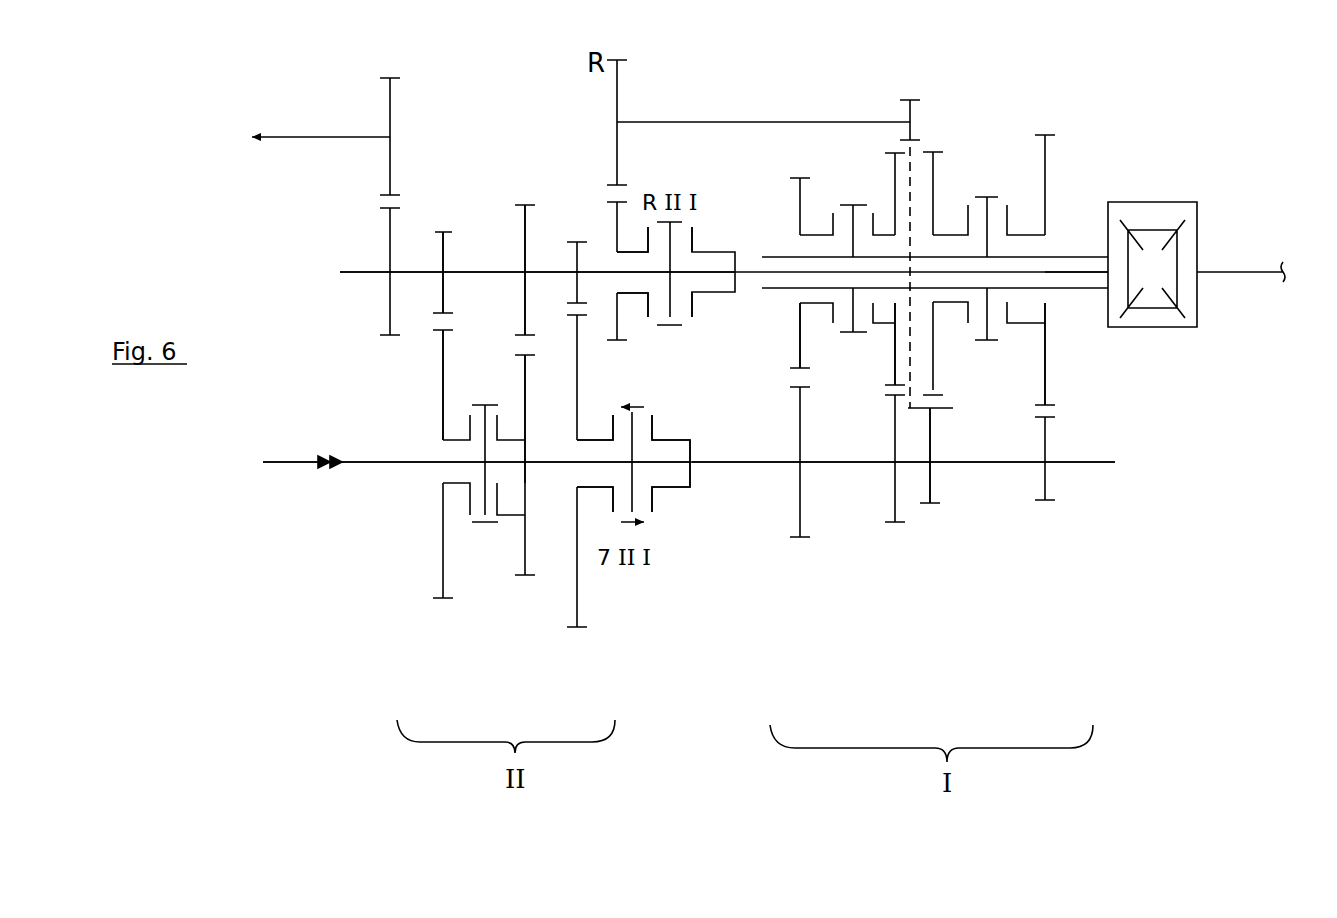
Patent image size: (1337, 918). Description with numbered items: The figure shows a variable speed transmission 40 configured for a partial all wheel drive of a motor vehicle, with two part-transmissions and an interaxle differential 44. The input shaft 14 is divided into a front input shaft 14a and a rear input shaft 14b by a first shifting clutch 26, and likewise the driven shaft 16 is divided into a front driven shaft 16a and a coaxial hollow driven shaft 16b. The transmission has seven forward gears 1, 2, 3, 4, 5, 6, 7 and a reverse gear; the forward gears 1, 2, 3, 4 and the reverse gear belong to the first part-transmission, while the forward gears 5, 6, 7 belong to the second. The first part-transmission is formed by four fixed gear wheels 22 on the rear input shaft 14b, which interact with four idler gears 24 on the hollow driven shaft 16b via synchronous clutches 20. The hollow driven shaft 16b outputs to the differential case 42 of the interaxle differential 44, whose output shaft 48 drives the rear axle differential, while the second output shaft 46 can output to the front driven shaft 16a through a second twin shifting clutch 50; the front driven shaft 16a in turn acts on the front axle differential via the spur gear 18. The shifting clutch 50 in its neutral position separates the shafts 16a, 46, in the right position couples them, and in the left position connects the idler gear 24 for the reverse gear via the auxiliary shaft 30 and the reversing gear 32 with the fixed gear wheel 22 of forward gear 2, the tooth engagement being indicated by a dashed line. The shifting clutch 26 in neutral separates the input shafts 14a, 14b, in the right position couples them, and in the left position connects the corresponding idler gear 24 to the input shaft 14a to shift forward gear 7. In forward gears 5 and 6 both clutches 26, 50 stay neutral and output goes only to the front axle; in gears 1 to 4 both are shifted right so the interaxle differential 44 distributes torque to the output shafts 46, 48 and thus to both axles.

The forward gear 1 is at (1060, 509).
The forward gear 2 is at (952, 534).
The forward gear 3 is at (893, 546).
The forward gear 4 is at (797, 563).
The forward gear 5 is at (527, 583).
The forward gear 6 is at (443, 606).
The forward gear 7 is at (580, 636).
The input shaft 14 is at (371, 506).
The front input shaft 14a is at (423, 462).
The rear input shaft 14b is at (1072, 460).
The driven shaft 16 is at (485, 265).
The front driven shaft 16a is at (543, 270).
The hollow driven shaft 16b is at (1070, 250).
The spur gear 18 is at (411, 174).
The synchronous clutch 20 is at (483, 396).
The fixed gear wheel 22 is at (445, 288).
The idler gear 24 is at (895, 203).
The first shifting clutch 26 is at (638, 399).
The auxiliary shaft 30 is at (742, 122).
The reversing gear 32 is at (620, 105).
The variable speed transmission 40 is at (261, 607).
The differential case 42 is at (1135, 330).
The interaxle differential 44 is at (1176, 340).
The second output shaft 46 is at (748, 268).
The output shaft 48 is at (1245, 282).
The second twin shifting clutch 50 is at (711, 333).